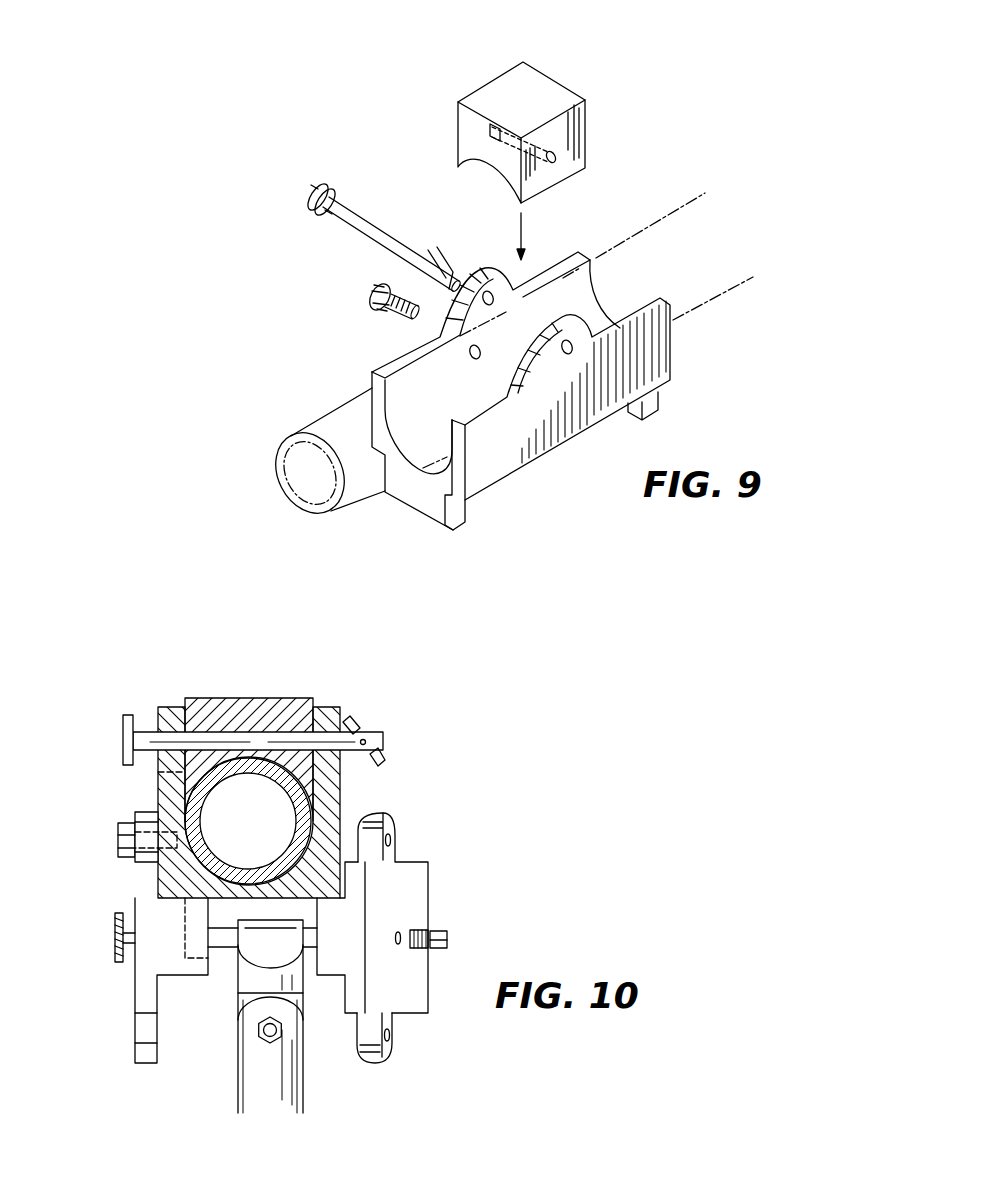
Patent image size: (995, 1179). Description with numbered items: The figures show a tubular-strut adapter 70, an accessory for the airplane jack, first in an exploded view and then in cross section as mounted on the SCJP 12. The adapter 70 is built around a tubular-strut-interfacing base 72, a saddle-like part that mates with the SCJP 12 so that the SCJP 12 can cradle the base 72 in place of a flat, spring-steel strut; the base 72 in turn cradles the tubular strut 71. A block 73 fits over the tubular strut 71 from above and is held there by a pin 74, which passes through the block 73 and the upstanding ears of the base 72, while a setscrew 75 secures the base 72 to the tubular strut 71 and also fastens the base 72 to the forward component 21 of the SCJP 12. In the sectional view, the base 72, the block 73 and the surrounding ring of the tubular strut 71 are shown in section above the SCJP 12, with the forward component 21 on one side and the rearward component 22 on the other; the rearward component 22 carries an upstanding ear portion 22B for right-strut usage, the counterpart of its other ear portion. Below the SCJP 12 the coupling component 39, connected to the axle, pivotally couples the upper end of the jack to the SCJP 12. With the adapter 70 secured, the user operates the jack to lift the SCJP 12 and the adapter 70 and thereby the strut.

In FIG. 9, the adapter 70 is at (360, 122).
In FIG. 10, the adapter 70 is at (131, 636).
In FIG. 9, the tubular strut 71 is at (727, 293).
In FIG. 10, the tubular strut 71 is at (207, 852).
In FIG. 9, the tubular-strut-interfacing base 72 is at (663, 365).
In FIG. 10, the tubular-strut-interfacing base 72 is at (340, 797).
In FIG. 9, the block 73 is at (556, 92).
In FIG. 10, the block 73 is at (257, 697).
In FIG. 9, the pin 74 is at (316, 198).
In FIG. 10, the pin 74 is at (123, 740).
In FIG. 9, the setscrew 75 is at (365, 296).
In FIG. 10, the setscrew 75 is at (118, 838).
In FIG. 10, the SCJP 12 is at (436, 857).
In FIG. 10, the forward component 21 is at (143, 984).
In FIG. 10, the rearward component 22 is at (415, 897).
In FIG. 10, the upstanding ear portion 22B is at (388, 1053).
In FIG. 10, the coupling component 39 is at (247, 1028).